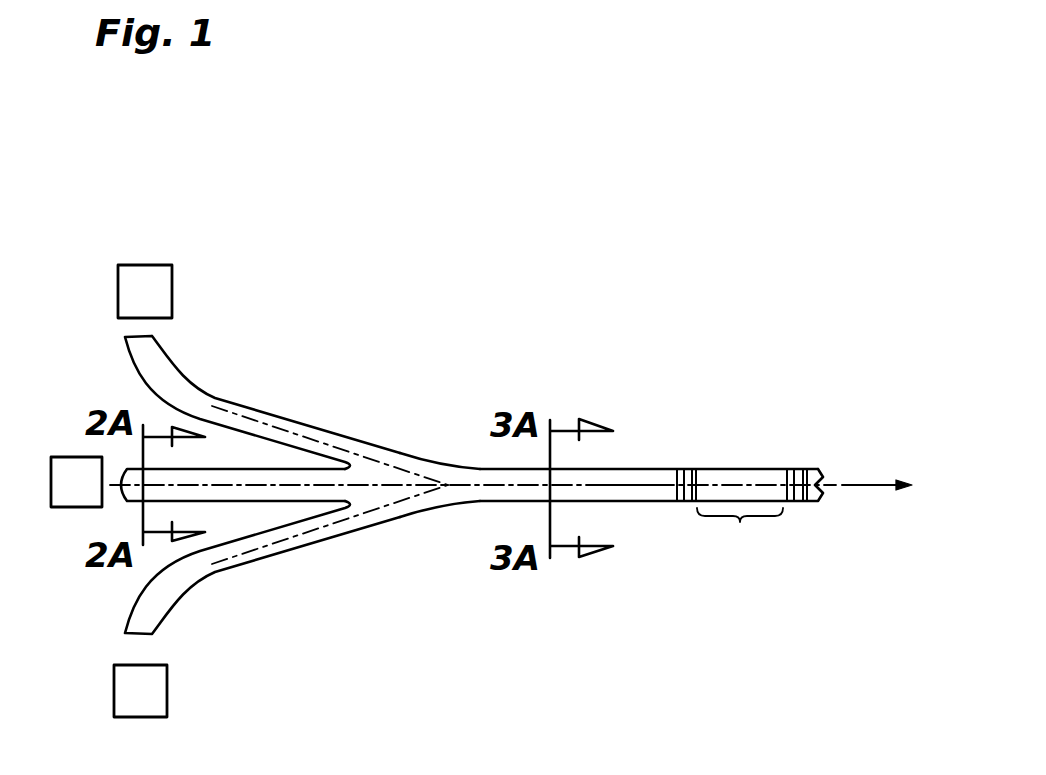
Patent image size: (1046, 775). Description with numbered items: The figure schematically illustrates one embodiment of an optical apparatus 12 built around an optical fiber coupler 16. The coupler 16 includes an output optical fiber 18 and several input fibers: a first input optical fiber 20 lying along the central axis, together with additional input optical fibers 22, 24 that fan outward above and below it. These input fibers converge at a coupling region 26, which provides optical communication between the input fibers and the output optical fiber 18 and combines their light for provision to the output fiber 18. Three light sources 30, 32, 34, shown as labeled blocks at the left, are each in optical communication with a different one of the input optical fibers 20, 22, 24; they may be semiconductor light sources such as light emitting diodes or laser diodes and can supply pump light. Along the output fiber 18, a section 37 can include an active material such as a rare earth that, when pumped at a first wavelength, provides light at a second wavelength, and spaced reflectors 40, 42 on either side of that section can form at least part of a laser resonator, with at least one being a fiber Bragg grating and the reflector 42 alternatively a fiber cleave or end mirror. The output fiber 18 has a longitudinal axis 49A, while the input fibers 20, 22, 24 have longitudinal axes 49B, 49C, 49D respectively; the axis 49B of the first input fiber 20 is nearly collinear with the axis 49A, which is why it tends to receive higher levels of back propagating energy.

The optical apparatus 12 is at (360, 168).
The optical fiber coupler 16 is at (518, 340).
The output optical fiber 18 is at (696, 497).
The first input optical fiber 20 is at (125, 497).
The input optical fiber 22 is at (286, 583).
The input optical fiber 24 is at (286, 386).
The coupling region 26 is at (452, 537).
The light source 30 is at (92, 494).
The light source 32 is at (156, 708).
The light source 34 is at (157, 304).
The section of the output optical fiber 37 is at (740, 530).
The reflector 40 is at (690, 463).
The reflector 42 is at (797, 465).
The longitudinal axis 49A is at (620, 480).
The longitudinal axis 49B is at (283, 484).
The longitudinal axis 49C is at (253, 548).
The longitudinal axis 49D is at (272, 427).